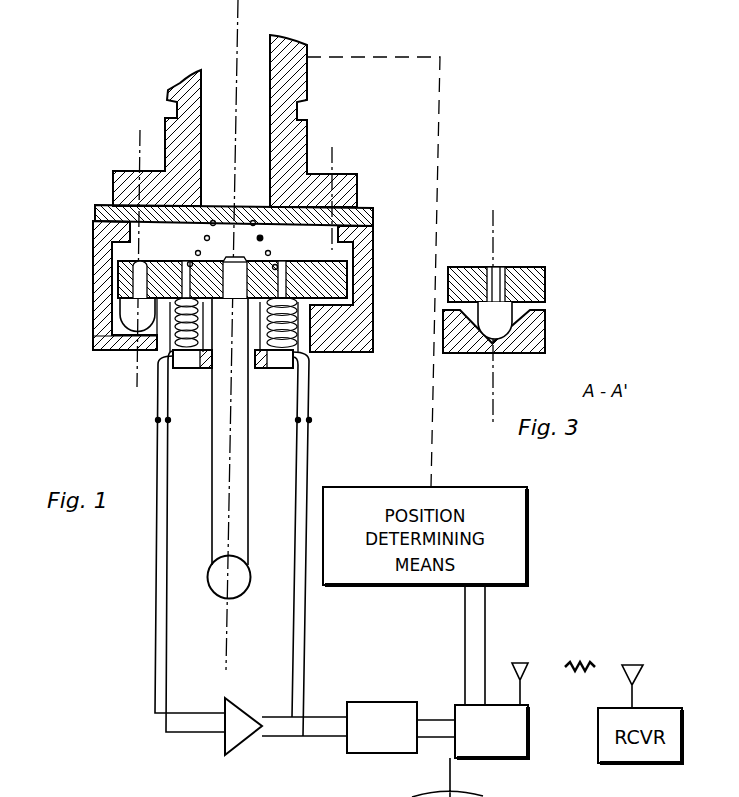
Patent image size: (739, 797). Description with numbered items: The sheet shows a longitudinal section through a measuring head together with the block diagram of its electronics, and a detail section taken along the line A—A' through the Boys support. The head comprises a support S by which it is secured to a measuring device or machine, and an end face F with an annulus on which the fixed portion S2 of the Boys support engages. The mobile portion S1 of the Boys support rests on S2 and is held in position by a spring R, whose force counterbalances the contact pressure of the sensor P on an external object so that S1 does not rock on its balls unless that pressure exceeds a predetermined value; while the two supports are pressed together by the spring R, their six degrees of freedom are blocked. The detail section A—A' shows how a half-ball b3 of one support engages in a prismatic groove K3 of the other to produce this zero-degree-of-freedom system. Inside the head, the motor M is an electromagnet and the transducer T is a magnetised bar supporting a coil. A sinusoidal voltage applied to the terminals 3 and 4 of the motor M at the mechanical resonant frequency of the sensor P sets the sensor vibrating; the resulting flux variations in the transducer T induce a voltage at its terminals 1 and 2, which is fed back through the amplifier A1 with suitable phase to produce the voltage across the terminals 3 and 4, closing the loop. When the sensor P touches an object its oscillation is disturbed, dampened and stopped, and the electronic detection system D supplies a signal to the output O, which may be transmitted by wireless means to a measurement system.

In FIG. 1, the support S is at (305, 80).
In FIG. 1, the end face F is at (372, 215).
In FIG. 1, the mobile portion of the Boys support S1 is at (338, 280).
In FIG. 3, the mobile portion of the Boys support S1 is at (540, 268).
In FIG. 1, the fixed portion of the Boys support S2 is at (333, 352).
In FIG. 3, the fixed portion of the Boys support S2 is at (542, 343).
In FIG. 1, the prismatic groove K3 is at (125, 323).
In FIG. 1, the half-ball b3 is at (93, 341).
In FIG. 3, the half-ball b3 is at (507, 320).
In FIG. 1, the spring R is at (260, 238).
In FIG. 1, the transducer T is at (207, 368).
In FIG. 1, the motor M is at (293, 368).
In FIG. 1, the sensor P is at (238, 508).
In FIG. 1, the terminal of the transducer 1 is at (196, 541).
In FIG. 1, the terminal of the transducer 2 is at (179, 534).
In FIG. 1, the terminal of the motor 3 is at (289, 537).
In FIG. 1, the terminal of the motor 4 is at (308, 544).
In FIG. 1, the amplifier A1 is at (286, 726).
In FIG. 1, the electronic detection system D is at (401, 727).
In FIG. 1, the output O is at (470, 691).
In FIG. 1, the section line A—A' A is at (144, 258).
In FIG. 1, the section line A— A' is at (145, 376).